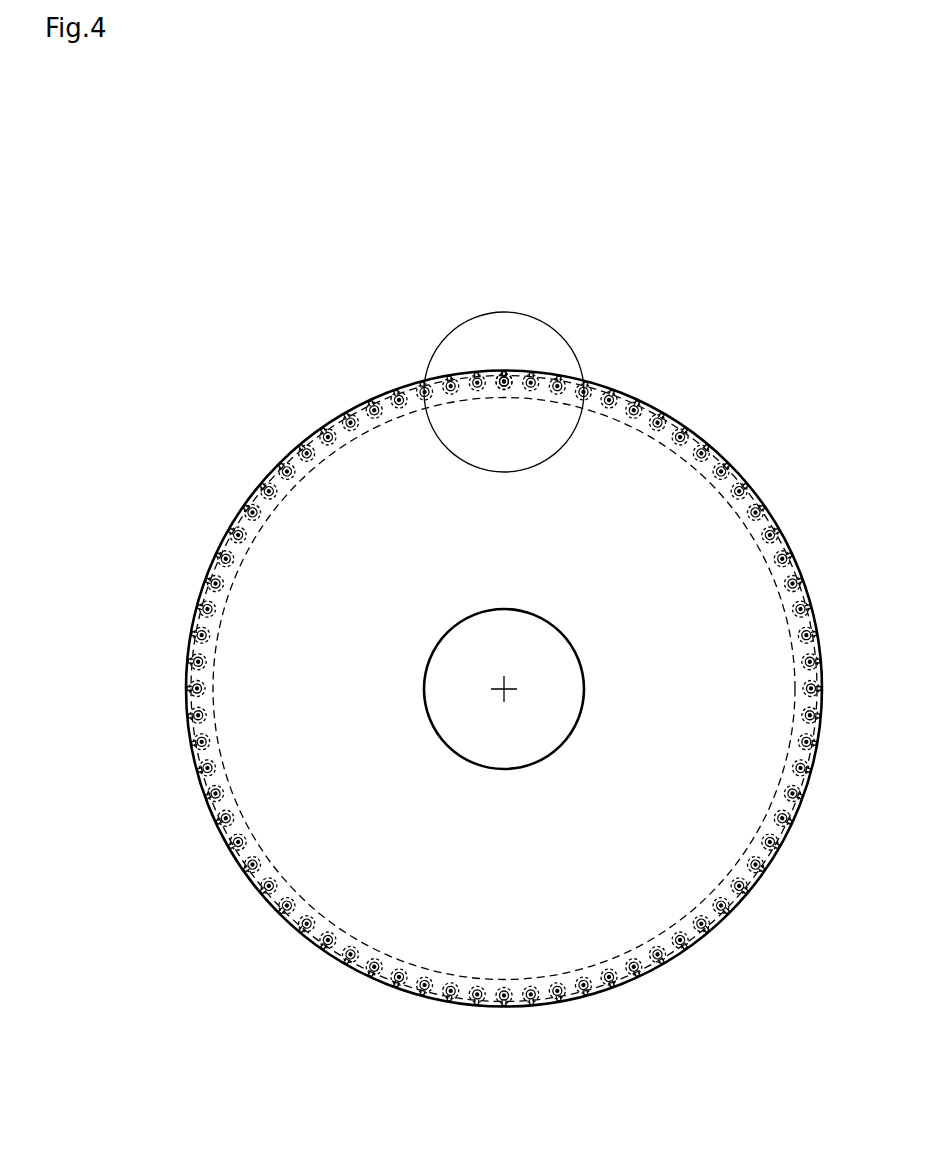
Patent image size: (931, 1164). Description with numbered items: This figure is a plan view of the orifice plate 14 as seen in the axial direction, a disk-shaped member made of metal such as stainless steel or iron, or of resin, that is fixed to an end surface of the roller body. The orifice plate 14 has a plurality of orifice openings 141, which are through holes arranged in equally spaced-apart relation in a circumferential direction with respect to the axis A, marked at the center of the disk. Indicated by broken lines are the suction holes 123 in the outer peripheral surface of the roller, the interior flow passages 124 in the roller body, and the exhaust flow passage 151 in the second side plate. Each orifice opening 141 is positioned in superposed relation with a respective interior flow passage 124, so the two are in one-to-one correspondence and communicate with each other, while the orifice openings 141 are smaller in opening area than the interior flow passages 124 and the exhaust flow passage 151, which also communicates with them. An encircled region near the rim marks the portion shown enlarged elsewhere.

The orifice plate 14 is at (391, 287).
The suction holes 123 is at (640, 397).
The interior flow passages 124 is at (630, 418).
The orifice openings 141 is at (476, 387).
The exhaust flow passage 151 is at (367, 423).
The axis A is at (512, 680).